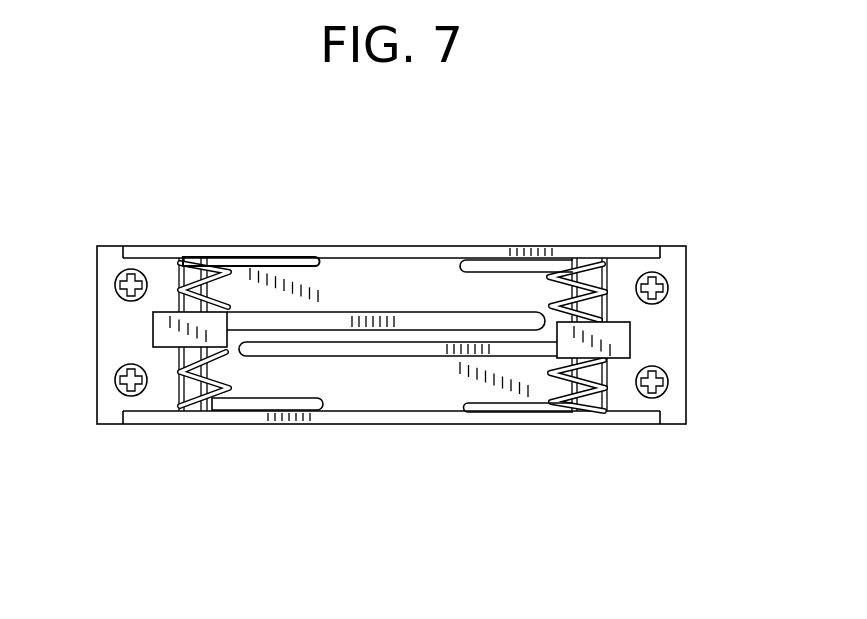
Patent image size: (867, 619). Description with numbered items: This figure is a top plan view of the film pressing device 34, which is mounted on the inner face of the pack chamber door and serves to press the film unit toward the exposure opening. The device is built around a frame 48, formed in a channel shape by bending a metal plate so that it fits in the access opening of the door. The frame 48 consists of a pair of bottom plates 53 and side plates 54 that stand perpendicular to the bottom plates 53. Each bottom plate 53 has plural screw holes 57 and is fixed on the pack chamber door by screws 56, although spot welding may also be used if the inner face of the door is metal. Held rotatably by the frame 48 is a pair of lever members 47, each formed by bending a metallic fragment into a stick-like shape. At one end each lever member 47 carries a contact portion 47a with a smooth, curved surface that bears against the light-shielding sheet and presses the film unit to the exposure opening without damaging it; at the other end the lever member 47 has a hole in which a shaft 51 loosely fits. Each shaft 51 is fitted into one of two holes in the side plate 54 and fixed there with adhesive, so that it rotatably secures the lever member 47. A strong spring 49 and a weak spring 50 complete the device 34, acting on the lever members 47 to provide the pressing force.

The film pressing device 34 is at (370, 200).
The lever member 47 is at (653, 343).
The contact portion 47a is at (545, 320).
The frame 48 is at (433, 444).
The strong spring 49 is at (603, 263).
The weak spring 50 is at (177, 268).
The shaft 51 is at (203, 268).
The bottom plate 53 is at (118, 267).
The side plate 54 is at (282, 248).
The screw 56 is at (667, 295).
The screw hole 57 is at (665, 280).